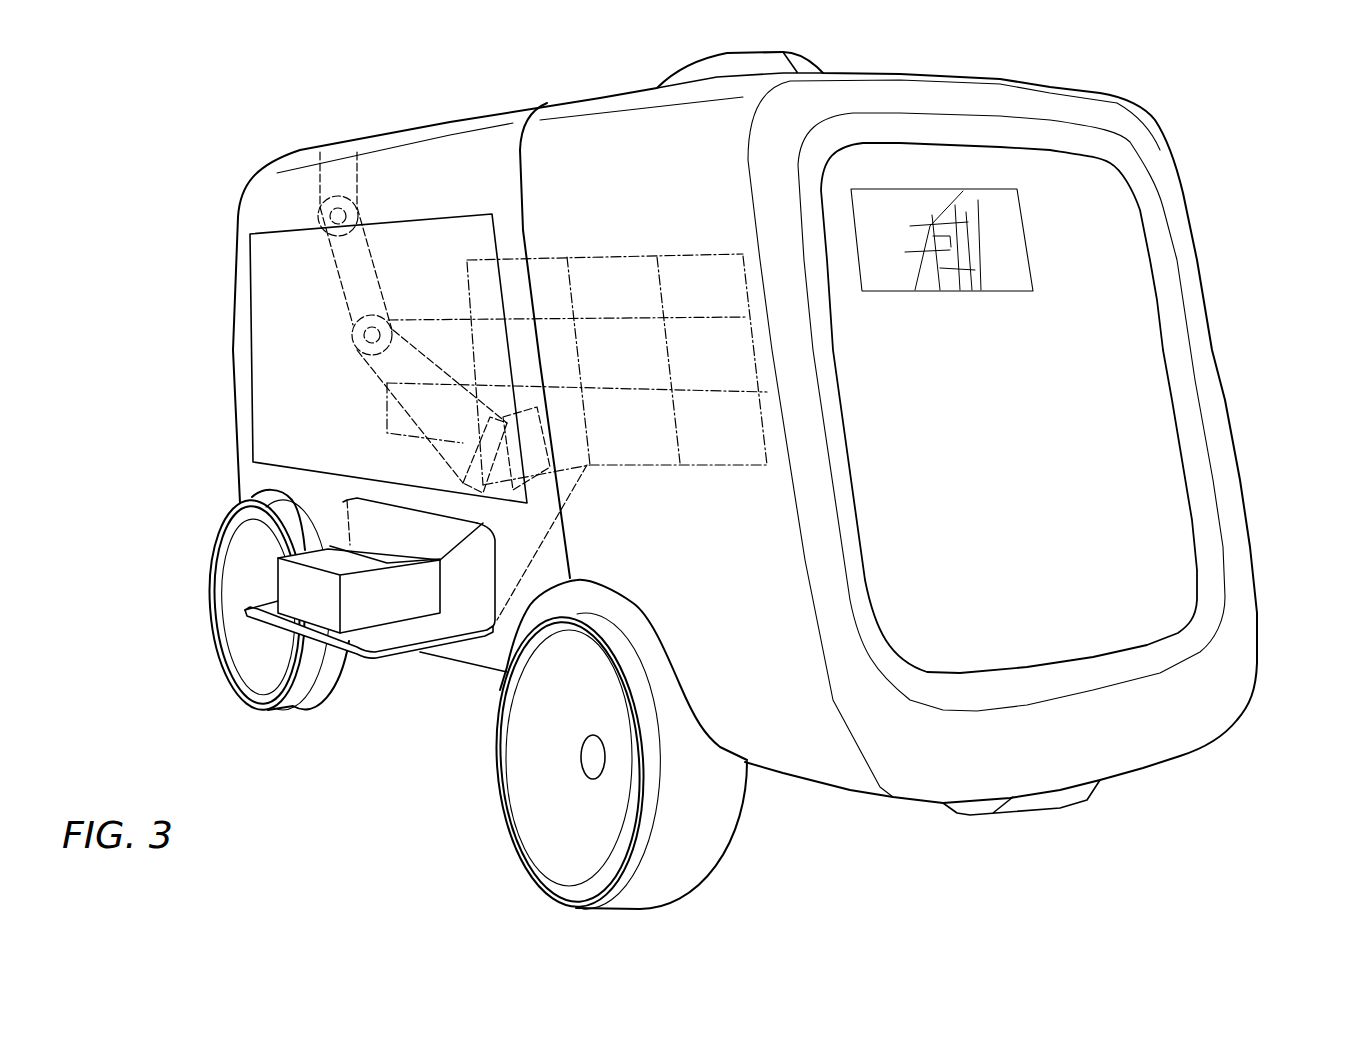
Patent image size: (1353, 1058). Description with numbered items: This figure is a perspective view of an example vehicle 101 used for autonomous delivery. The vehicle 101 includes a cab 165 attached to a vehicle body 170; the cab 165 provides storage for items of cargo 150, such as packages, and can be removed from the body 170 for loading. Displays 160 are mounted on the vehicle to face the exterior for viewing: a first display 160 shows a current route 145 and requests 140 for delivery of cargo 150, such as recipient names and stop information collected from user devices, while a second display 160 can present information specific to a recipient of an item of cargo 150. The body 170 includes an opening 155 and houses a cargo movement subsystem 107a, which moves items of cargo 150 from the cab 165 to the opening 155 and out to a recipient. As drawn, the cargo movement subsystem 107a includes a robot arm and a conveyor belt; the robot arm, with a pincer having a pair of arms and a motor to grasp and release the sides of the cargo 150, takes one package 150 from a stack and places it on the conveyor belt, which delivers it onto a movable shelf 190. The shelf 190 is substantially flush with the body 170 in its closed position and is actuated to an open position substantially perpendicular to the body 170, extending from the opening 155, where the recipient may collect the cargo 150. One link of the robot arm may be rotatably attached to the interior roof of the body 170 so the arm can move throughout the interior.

The vehicle 101 is at (74, 149).
The vehicle body 170 is at (437, 163).
The cab 165 is at (637, 125).
The display 160 is at (285, 352).
The current route 145 is at (1016, 229).
The requests 140 is at (1016, 457).
The cargo 150 is at (597, 253).
The cargo movement subsystem 107a is at (333, 281).
The opening 155 is at (378, 518).
The movable shelf 190 is at (385, 656).